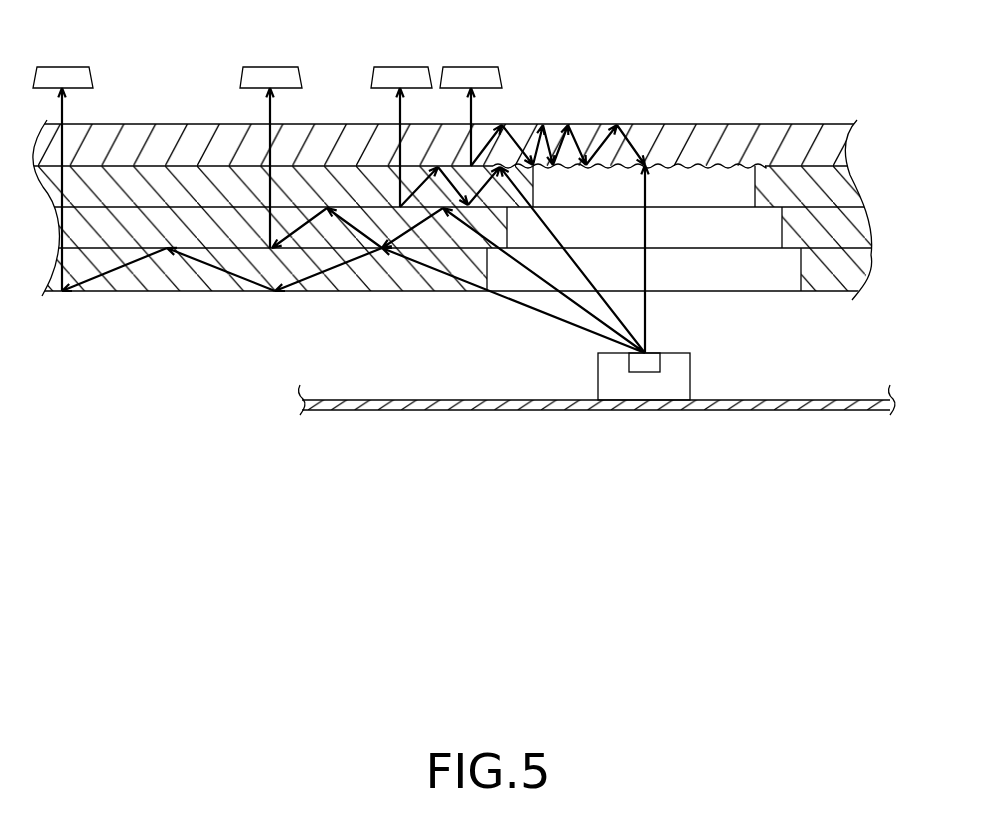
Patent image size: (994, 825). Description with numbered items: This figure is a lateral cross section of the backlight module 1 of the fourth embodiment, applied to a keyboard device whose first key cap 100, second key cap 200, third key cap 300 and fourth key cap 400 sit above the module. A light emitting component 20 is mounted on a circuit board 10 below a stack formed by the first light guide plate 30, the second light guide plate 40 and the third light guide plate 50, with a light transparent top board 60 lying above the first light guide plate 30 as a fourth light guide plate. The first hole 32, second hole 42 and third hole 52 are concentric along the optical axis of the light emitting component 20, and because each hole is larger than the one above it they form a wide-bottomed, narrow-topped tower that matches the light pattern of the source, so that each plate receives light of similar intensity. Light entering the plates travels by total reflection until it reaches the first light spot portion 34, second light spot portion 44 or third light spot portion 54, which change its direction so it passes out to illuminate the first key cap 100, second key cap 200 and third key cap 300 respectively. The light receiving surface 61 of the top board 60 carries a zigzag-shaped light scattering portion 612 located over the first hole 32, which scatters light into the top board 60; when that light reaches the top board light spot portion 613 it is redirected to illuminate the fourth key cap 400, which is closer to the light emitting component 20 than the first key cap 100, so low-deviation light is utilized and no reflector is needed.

The backlight module 1 is at (143, 396).
The circuit board 10 is at (533, 402).
The light emitting component 20 is at (653, 387).
The first light guide plate 30 is at (838, 185).
The first hole 32 is at (718, 182).
The first light spot portion 34 is at (400, 204).
The second light guide plate 40 is at (857, 225).
The second hole 42 is at (678, 229).
The second light spot portion 44 is at (269, 246).
The third light guide plate 50 is at (847, 270).
The third hole 52 is at (750, 272).
The third light spot portion 54 is at (63, 294).
The top board 60 is at (817, 128).
The light receiving surface 61 is at (765, 164).
The light scattering portion 612 is at (649, 164).
The top board light spot portion 613 is at (473, 163).
The first key cap 100 is at (387, 72).
The second key cap 200 is at (258, 72).
The third key cap 300 is at (65, 72).
The fourth key cap 400 is at (457, 72).